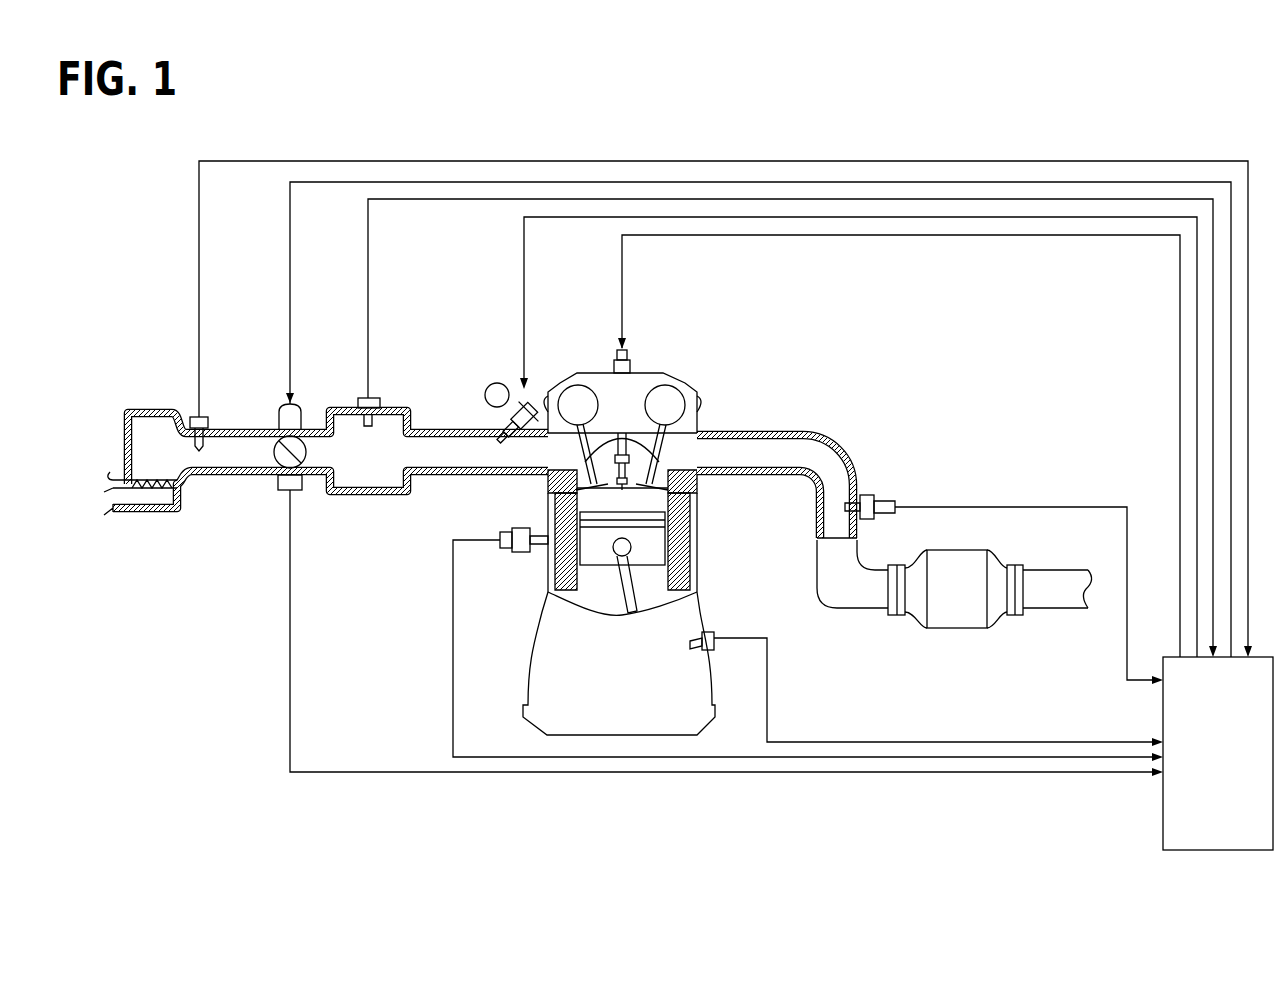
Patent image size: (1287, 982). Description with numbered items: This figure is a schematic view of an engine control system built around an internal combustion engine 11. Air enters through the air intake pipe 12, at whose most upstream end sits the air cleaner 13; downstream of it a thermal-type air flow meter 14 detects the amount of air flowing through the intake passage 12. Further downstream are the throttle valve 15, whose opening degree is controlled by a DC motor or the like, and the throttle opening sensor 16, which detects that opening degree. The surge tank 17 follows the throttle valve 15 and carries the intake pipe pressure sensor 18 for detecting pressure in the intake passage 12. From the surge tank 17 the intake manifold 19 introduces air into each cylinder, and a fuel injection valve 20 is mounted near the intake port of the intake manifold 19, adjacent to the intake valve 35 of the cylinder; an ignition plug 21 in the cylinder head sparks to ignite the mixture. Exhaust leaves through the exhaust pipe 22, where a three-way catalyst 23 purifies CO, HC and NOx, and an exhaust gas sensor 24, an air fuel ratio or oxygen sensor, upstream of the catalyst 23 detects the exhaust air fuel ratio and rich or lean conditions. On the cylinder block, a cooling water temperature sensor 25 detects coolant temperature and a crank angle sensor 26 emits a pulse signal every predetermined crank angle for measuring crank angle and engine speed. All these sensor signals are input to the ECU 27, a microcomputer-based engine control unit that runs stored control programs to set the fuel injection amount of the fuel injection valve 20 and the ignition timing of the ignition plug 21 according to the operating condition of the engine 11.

The internal combustion engine 11 is at (676, 378).
The air intake pipe 12 is at (250, 430).
The air cleaner 13 is at (150, 498).
The thermal-type air flow meter 14 is at (190, 418).
The throttle valve 15 is at (296, 458).
The throttle opening sensor 16 is at (280, 488).
The surge tank 17 is at (340, 408).
The intake pipe pressure sensor 18 is at (378, 398).
The intake manifold 19 is at (478, 477).
The fuel injection valve 20 is at (496, 420).
The ignition plug 21 is at (629, 430).
The exhaust pipe 22 is at (806, 432).
The three-way catalyst 23 is at (985, 556).
The exhaust gas sensor 24 is at (875, 498).
The cooling water temperature sensor 25 is at (523, 553).
The crank angle sensor 26 is at (716, 638).
The ECU 27 is at (1163, 715).
The intake valve 35 is at (548, 490).